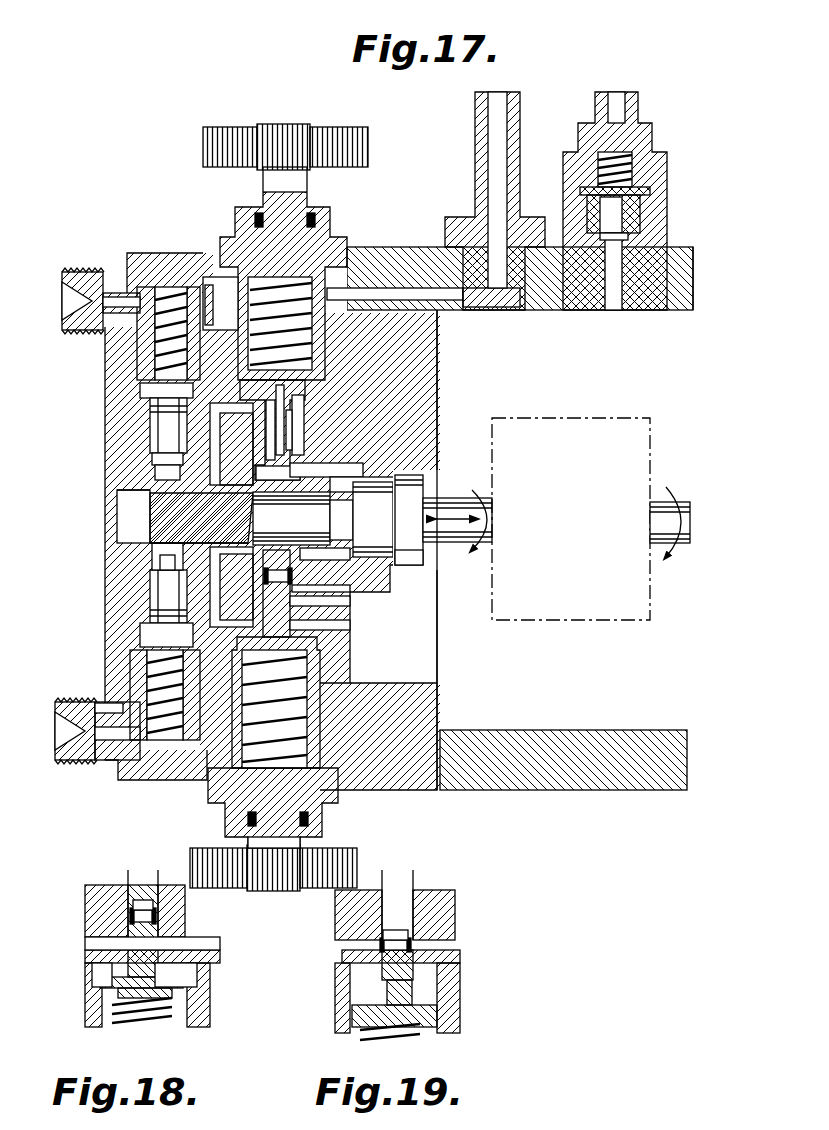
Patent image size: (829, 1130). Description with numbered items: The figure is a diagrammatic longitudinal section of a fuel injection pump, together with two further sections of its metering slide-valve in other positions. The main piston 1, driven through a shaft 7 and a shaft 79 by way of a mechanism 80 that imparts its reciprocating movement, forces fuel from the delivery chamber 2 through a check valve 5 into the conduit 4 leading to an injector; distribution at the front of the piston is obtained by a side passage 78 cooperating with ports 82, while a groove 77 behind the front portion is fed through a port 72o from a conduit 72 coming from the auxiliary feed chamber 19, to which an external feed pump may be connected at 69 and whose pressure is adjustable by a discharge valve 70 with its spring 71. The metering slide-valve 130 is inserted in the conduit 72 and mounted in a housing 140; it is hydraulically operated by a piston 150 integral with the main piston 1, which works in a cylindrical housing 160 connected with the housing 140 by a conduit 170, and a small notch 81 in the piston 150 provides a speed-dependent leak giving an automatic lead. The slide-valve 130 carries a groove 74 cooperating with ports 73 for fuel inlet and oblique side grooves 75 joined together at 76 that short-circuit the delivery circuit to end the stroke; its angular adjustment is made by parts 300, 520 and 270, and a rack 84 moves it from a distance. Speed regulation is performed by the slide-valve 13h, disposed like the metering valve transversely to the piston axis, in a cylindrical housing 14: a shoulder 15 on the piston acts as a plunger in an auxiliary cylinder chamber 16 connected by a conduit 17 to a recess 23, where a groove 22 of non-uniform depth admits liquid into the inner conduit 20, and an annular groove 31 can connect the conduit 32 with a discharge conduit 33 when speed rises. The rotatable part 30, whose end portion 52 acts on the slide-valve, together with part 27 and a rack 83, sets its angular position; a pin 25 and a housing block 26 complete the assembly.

In FIG. 17, the main piston 1 is at (160, 521).
In FIG. 17, the delivery chamber 2 is at (125, 512).
In FIG. 17, the conduit 4 is at (110, 300).
In FIG. 17, the check valve 5 is at (157, 440).
In FIG. 17, the shaft 7 is at (448, 513).
In FIG. 17, the speed regulation slide-valve 13h is at (370, 393).
In FIG. 17, the cylindrical housing 14 is at (152, 390).
In FIG. 17, the shoulder 15 is at (404, 512).
In FIG. 17, the auxiliary cylinder chamber 16 is at (386, 478).
In FIG. 17, the conduit 17 is at (290, 424).
In FIG. 17, the auxiliary feed chamber 19 is at (643, 343).
In FIG. 17, the inner conduit 20 is at (310, 383).
In FIG. 17, the groove 22 is at (170, 456).
In FIG. 17, the recess 23 is at (170, 472).
In FIG. 17, the pin 25 is at (230, 305).
In FIG. 17, the housing block 26 is at (393, 293).
In FIG. 17, the part 27 is at (310, 267).
In FIG. 17, the rotatable part 30 is at (290, 179).
In FIG. 17, the annular groove 31 is at (300, 408).
In FIG. 17, the conduit 32 is at (192, 425).
In FIG. 17, the discharge conduit 33 is at (307, 400).
In FIG. 17, the end portion 52 is at (330, 313).
In FIG. 17, the feed pump connection 69 is at (497, 141).
In FIG. 17, the discharge valve 70 is at (622, 196).
In FIG. 18, the discharge valve 70 is at (147, 912).
In FIG. 19, the discharge valve 70 is at (393, 948).
In FIG. 17, the spring 71 is at (612, 178).
In FIG. 17, the conduit 72 is at (150, 633).
In FIG. 18, the conduit 72 is at (190, 950).
In FIG. 19, the conduit 72 is at (447, 948).
In FIG. 17, the port 72o is at (200, 560).
In FIG. 17, the ports 73 is at (320, 602).
In FIG. 18, the ports 73 is at (173, 940).
In FIG. 17, the groove 74 is at (300, 628).
In FIG. 18, the groove 74 is at (128, 971).
In FIG. 19, the groove 74 is at (387, 995).
In FIG. 17, the helical profile 75 is at (350, 560).
In FIG. 18, the helical profile 75 is at (160, 915).
In FIG. 19, the helical profile 75 is at (413, 947).
In FIG. 17, the connection 76 is at (280, 570).
In FIG. 17, the groove 77 is at (215, 552).
In FIG. 17, the side passage 78 is at (200, 488).
In FIG. 17, the shaft 79 is at (660, 515).
In FIG. 17, the mechanism 80 is at (612, 418).
In FIG. 17, the notch 81 is at (335, 470).
In FIG. 17, the ports 82 is at (215, 543).
In FIG. 17, the rack 83 is at (237, 150).
In FIG. 17, the rack 84 is at (222, 858).
In FIG. 17, the metering slide-valve 130 is at (350, 589).
In FIG. 18, the metering slide-valve 130 is at (133, 933).
In FIG. 19, the metering slide-valve 130 is at (392, 970).
In FIG. 17, the housing 140 is at (157, 605).
In FIG. 17, the piston 150 is at (373, 519).
In FIG. 17, the cylindrical housing 160 is at (375, 405).
In FIG. 17, the conduit 170 is at (414, 557).
In FIG. 17, the part 270 is at (333, 788).
In FIG. 18, the part 270 is at (112, 1005).
In FIG. 19, the part 270 is at (363, 1033).
In FIG. 17, the part 300 is at (310, 857).
In FIG. 17, the part 520 is at (323, 698).
In FIG. 18, the part 520 is at (197, 1022).
In FIG. 19, the part 520 is at (440, 1033).